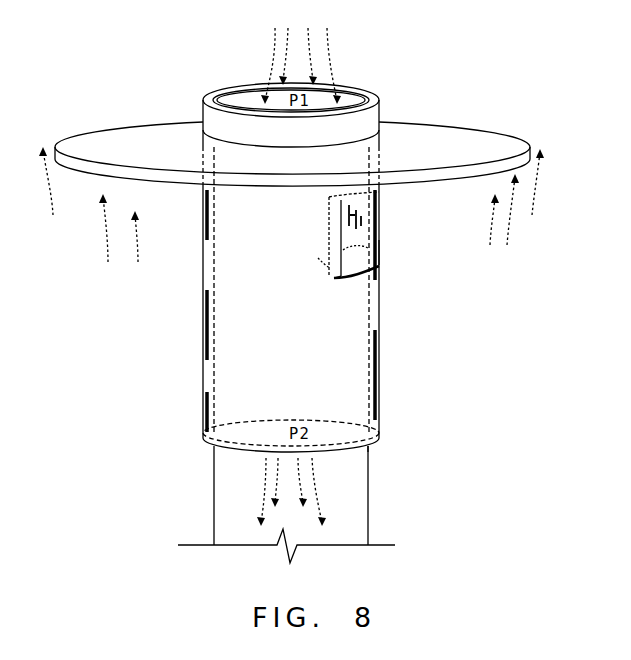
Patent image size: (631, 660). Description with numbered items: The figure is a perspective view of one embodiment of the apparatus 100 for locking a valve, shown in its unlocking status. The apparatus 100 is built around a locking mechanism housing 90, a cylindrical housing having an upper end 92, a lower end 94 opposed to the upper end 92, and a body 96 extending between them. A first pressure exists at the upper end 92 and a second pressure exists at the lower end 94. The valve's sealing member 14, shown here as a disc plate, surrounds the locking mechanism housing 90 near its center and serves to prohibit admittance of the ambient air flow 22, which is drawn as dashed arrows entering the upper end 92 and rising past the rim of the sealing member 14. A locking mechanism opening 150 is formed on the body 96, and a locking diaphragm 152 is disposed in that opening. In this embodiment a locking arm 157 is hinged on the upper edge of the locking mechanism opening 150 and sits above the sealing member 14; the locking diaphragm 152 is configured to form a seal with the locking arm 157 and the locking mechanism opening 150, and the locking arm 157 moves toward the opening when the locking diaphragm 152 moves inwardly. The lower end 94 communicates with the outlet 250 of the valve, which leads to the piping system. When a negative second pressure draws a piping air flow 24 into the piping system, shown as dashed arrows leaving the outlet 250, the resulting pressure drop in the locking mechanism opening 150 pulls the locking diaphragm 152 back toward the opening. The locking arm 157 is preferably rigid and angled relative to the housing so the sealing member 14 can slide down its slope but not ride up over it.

The sealing member 14 is at (475, 145).
The ambient air flow 22 is at (325, 76).
The piping air flow 24 is at (315, 495).
The locking mechanism housing 90 is at (183, 304).
The upper end 92 is at (205, 100).
The lower end 94 is at (372, 446).
The body 96 is at (213, 432).
The apparatus 100 is at (383, 254).
The locking mechanism opening 150 is at (387, 235).
The locking diaphragm 152 is at (326, 270).
The locking arm 157 is at (372, 232).
The outlet 250 is at (365, 475).